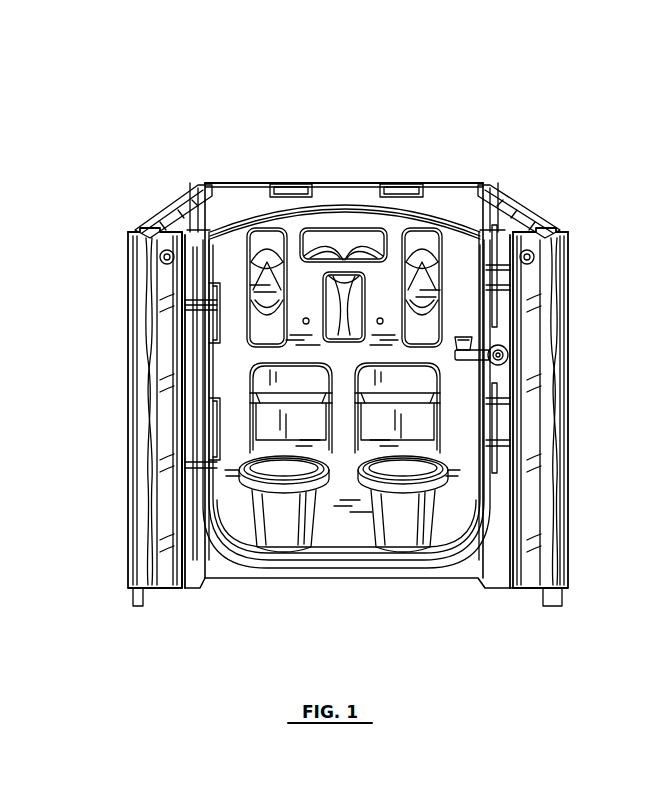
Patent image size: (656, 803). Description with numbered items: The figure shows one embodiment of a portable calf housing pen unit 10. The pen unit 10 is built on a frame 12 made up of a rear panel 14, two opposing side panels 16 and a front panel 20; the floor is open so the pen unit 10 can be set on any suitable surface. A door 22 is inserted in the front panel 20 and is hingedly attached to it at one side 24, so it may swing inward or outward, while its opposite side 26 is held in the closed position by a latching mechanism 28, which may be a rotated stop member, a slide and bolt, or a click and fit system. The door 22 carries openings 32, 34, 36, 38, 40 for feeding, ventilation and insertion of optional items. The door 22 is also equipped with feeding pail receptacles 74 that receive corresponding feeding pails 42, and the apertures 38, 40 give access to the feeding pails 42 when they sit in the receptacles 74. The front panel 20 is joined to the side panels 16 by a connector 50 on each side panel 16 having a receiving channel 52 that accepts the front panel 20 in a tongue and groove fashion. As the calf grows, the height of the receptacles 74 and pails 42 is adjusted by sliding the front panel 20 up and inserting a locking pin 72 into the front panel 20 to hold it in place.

The portable pen unit 10 is at (500, 128).
The frame 12 is at (174, 176).
The rear panel 14 is at (350, 238).
The side panels 16 is at (180, 197).
The front panel 20 is at (493, 432).
The door 22 is at (458, 297).
The one side 24 is at (215, 305).
The opposite side 26 is at (483, 323).
The latching mechanism 28 is at (510, 350).
The opening 32 is at (275, 240).
The opening 34 is at (345, 275).
The opening 36 is at (418, 238).
The aperture 38 is at (277, 420).
The aperture 40 is at (407, 446).
The feeding pail 42 is at (273, 532).
The connector 50 is at (128, 349).
The receiving channel 52 is at (118, 232).
The locking pin 72 is at (160, 258).
The feeding pail receptacle 74 is at (224, 466).